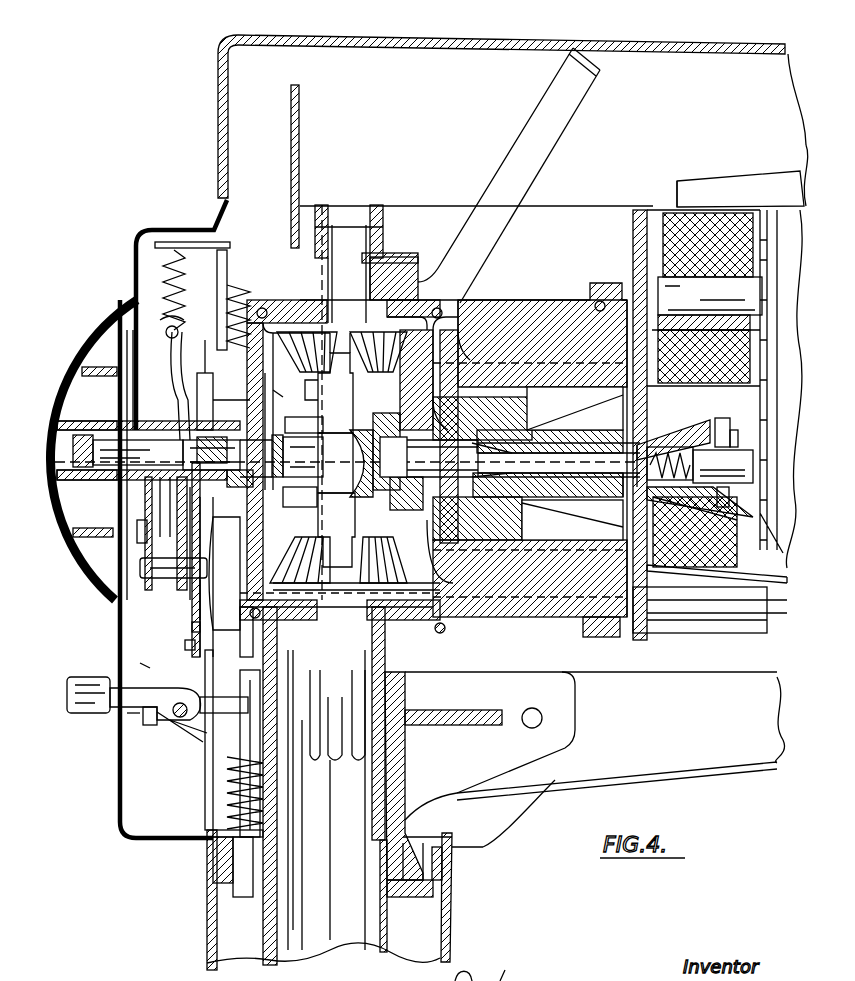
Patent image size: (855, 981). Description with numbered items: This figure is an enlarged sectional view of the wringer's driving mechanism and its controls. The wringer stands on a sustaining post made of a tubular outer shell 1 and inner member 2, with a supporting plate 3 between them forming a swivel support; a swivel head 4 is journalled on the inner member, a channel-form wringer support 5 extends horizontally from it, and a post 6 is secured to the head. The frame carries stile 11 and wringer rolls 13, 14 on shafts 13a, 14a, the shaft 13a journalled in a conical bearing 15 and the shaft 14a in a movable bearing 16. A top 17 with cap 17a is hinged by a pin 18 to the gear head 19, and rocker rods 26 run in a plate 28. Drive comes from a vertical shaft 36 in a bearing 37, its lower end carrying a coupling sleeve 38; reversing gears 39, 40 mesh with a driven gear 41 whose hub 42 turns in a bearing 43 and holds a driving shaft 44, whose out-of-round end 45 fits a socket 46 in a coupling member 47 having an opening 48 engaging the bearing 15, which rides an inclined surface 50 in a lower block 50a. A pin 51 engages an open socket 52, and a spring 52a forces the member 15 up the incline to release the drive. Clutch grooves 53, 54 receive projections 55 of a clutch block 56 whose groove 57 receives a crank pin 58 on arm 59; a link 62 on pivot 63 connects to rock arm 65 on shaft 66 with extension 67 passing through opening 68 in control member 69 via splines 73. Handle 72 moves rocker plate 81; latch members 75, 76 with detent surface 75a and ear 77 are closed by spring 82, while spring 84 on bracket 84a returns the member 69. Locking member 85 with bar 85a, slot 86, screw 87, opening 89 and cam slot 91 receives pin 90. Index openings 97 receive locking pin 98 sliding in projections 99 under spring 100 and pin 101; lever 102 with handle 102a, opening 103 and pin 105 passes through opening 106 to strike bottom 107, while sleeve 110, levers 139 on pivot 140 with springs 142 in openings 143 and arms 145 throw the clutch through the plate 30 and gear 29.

The outer shell 1 is at (452, 942).
The inner member 2 is at (385, 940).
The supporting plate 3 is at (440, 882).
The swivel head 4 is at (407, 773).
The wringer support 5 is at (680, 773).
The post 6 is at (213, 785).
The stile 11 is at (727, 175).
The wringer roll 13 is at (760, 410).
The shaft 13a is at (717, 424).
The wringer roll 14 is at (742, 410).
The shaft 14a is at (748, 283).
The bearing 15 is at (688, 430).
The movable bearing 16 is at (675, 242).
The top 17 is at (670, 48).
The cover cap 17a is at (790, 180).
The pin 18 is at (300, 192).
The gear head 19 is at (506, 315).
The rocker rods 26 is at (695, 610).
The plate 28 is at (340, 620).
The lower bevel gear 29 is at (300, 563).
The shift plate 30 is at (218, 560).
The vertical shaft 36 is at (372, 648).
The bearing 37 is at (372, 628).
The coupling sleeve 38 is at (385, 713).
The reversing gear 39 is at (298, 555).
The reversing gear 40 is at (343, 450).
The driven gear 41 is at (406, 380).
The hub 42 is at (520, 410).
The bearing 43 is at (525, 527).
The driving shaft 44 is at (550, 427).
The out-of-round end 45 is at (575, 408).
The out-of-round socket 46 is at (548, 489).
The coupling member 47 is at (560, 430).
The out-of-round opening 48 is at (593, 493).
The inclined bearing surface 50 is at (737, 530).
The lower block 50a is at (745, 558).
The pin 51 is at (740, 428).
The open socket 52 is at (700, 415).
The spring 52a is at (723, 466).
The clutch groove 53 is at (314, 530).
The clutch groove 54 is at (372, 386).
The projections 55 is at (326, 388).
The clutch block 56 is at (318, 410).
The circumferential groove 57 is at (308, 527).
The crank pin 58 is at (304, 425).
The arm 59 is at (335, 463).
The link 62 is at (276, 428).
The pivot 63 is at (286, 388).
The rock arm 65 is at (250, 415).
The shaft 66 is at (219, 375).
The extension 67 is at (155, 440).
The opening 68 is at (211, 455).
The control member 69 is at (172, 380).
The handle 72 is at (56, 478).
The splines 73 is at (148, 456).
The latch member 75 is at (225, 462).
The latching detent surface 75a is at (176, 592).
The latch member 76 is at (221, 300).
The ear 77 is at (137, 540).
The rocker plate 81 is at (145, 505).
The spring 82 is at (183, 320).
The spring 84 is at (164, 290).
The bracket 84a is at (195, 240).
The locking member 85 is at (196, 608).
The bar 85a is at (222, 262).
The slot 86 is at (192, 628).
The screw 87 is at (185, 645).
The opening 89 is at (214, 398).
The pin 90 is at (160, 585).
The cam slot 91 is at (215, 562).
The index openings 97 is at (212, 893).
The locking pin 98 is at (240, 898).
The projections 99 is at (235, 755).
The spring 100 is at (230, 802).
The pin 101 is at (205, 840).
The lever 102 is at (140, 705).
The handle 102a is at (68, 708).
The opening 103 is at (300, 745).
The pin 105 is at (178, 718).
The opening 106 is at (140, 678).
The bottom 107 is at (128, 715).
The sleeve 110 is at (281, 456).
The levers 139 is at (338, 264).
The pivot connection 140 is at (470, 318).
The springs 142 is at (252, 310).
The openings 143 is at (255, 290).
The extending arms 145 is at (566, 83).